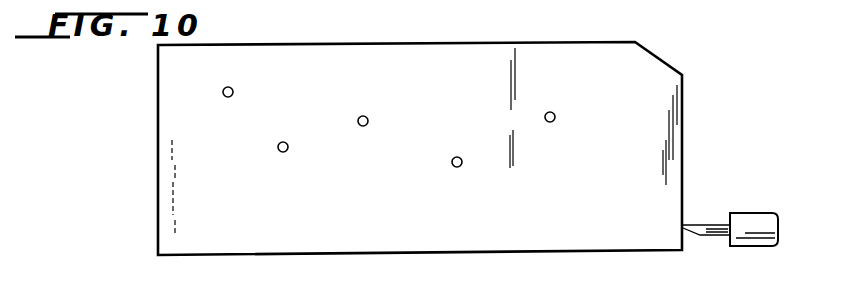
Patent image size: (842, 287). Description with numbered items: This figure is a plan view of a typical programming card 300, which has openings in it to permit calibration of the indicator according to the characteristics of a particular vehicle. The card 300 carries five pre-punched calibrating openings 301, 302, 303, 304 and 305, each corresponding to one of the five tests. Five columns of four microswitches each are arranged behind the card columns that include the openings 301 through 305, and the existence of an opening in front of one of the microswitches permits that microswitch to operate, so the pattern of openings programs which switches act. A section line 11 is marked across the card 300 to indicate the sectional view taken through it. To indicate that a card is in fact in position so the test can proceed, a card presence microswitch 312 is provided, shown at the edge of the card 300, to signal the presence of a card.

The section line 11- 11 is at (230, 30).
The programming card 300 is at (594, 203).
The calibrating opening 301 is at (233, 91).
The calibrating opening 302 is at (281, 152).
The calibrating opening 303 is at (368, 120).
The calibrating opening 304 is at (455, 167).
The calibrating opening 305 is at (555, 116).
The card presence microswitch 312 is at (753, 212).